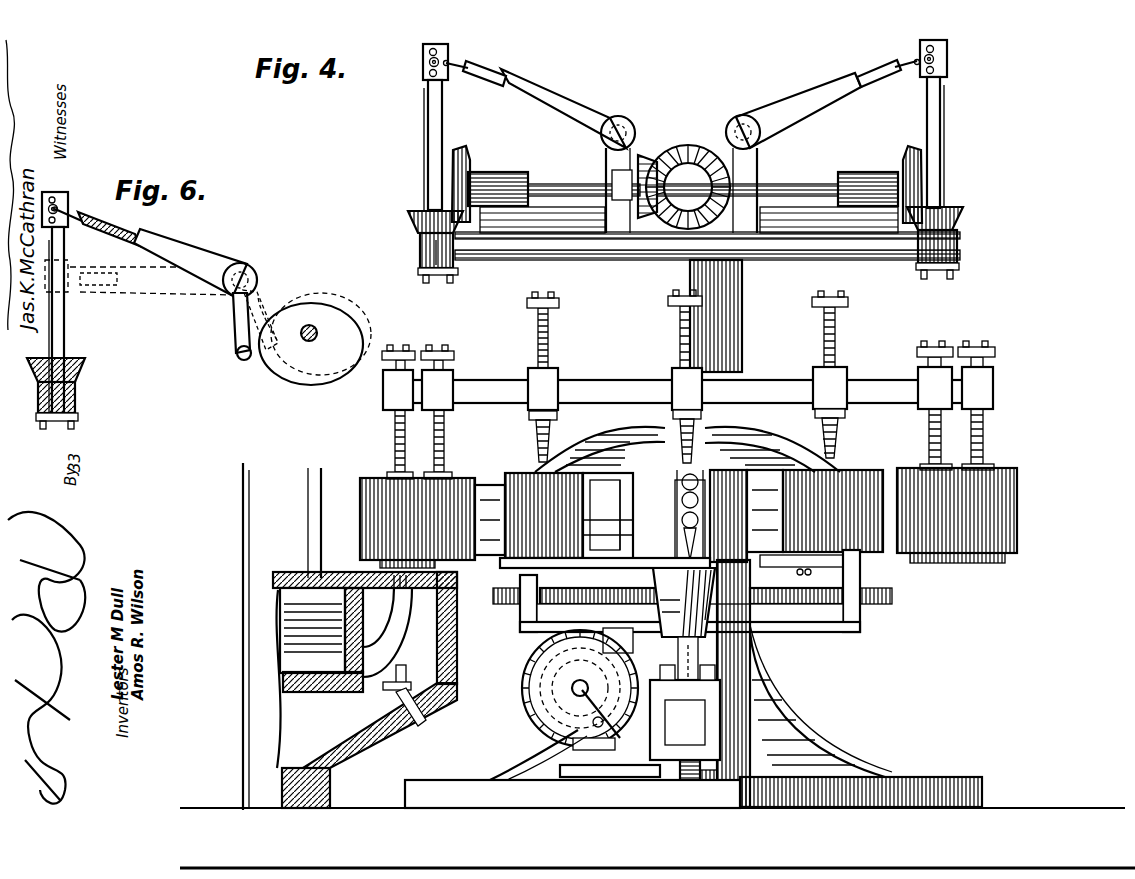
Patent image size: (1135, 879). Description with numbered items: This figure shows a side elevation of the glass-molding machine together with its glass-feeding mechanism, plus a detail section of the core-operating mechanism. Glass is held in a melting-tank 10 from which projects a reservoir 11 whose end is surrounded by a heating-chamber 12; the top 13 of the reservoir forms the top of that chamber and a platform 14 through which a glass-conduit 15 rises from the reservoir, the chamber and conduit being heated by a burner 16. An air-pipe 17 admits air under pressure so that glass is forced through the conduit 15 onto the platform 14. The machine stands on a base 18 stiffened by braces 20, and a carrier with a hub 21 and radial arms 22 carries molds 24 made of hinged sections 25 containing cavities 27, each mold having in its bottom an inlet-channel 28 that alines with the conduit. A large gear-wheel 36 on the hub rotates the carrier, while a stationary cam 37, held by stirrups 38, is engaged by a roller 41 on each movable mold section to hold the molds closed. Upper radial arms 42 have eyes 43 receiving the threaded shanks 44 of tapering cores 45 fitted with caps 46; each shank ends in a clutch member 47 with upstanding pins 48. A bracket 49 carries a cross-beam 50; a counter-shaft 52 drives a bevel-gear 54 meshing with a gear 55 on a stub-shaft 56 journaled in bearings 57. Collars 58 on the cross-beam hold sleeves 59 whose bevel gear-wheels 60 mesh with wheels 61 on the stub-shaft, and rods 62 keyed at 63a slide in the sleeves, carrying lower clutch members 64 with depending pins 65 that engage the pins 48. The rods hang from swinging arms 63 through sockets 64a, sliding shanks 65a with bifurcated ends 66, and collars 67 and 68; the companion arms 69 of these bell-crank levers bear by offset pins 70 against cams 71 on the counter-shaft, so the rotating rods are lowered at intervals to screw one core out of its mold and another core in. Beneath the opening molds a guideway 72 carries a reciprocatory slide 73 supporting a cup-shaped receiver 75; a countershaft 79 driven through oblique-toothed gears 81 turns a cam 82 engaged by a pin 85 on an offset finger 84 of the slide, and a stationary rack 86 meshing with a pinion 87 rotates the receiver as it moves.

In FIG. 4, the melting-tank 10 is at (936, 763).
In FIG. 4, the reservoir 11 is at (330, 600).
In FIG. 4, the heating-chamber 12 is at (367, 690).
In FIG. 4, the top 13 is at (362, 582).
In FIG. 6, the top 13 is at (138, 296).
In FIG. 4, the platform 14 is at (394, 572).
In FIG. 4, the glass-conduit 15 is at (398, 640).
In FIG. 4, the burner 16 is at (390, 690).
In FIG. 4, the air-pipe 17 is at (308, 500).
In FIG. 4, the base 18 is at (572, 794).
In FIG. 4, the braces 20 is at (520, 766).
In FIG. 4, the hub 21 is at (736, 413).
In FIG. 4, the radial arms 22 is at (632, 437).
In FIG. 4, the molds 24 is at (362, 478).
In FIG. 4, the sections 25 is at (655, 497).
In FIG. 4, the cavities 27 is at (692, 470).
In FIG. 4, the inlet-channels 28 is at (684, 602).
In FIG. 4, the gear-wheel 36 is at (893, 597).
In FIG. 4, the cam 37 is at (618, 562).
In FIG. 4, the stirrups 38 is at (520, 618).
In FIG. 4, the roller 41 is at (768, 556).
In FIG. 4, the radial arms 42 is at (600, 382).
In FIG. 4, the eyes 43 is at (383, 392).
In FIG. 4, the shanks 44 is at (548, 342).
In FIG. 4, the cores 45 is at (550, 440).
In FIG. 4, the caps 46 is at (557, 416).
In FIG. 4, the clutch members 47 is at (384, 356).
In FIG. 4, the pins 48 is at (668, 296).
In FIG. 4, the bracket 49 is at (636, 150).
In FIG. 4, the cross-beam 50 is at (596, 262).
In FIG. 6, the counter-shaft 52 is at (314, 338).
In FIG. 4, the bevel-gear 54 is at (703, 148).
In FIG. 4, the gear 55 is at (640, 205).
In FIG. 4, the stub-shaft 56 is at (806, 172).
In FIG. 4, the bearings 57 is at (508, 164).
In FIG. 4, the upright collars 58 is at (420, 250).
In FIG. 4, the sleeves 59 is at (420, 258).
In FIG. 6, the sleeves 59 is at (78, 400).
In FIG. 4, the bevel gear-wheels 60 is at (425, 212).
In FIG. 6, the bevel gear-wheels 60 is at (82, 368).
In FIG. 4, the wheels 61 is at (458, 150).
In FIG. 4, the rods 62 is at (442, 100).
In FIG. 6, the rods 62 is at (64, 326).
In FIG. 4, the swinging arms 63 is at (560, 94).
In FIG. 6, the swinging arms 63 is at (180, 254).
In FIG. 4, the key 63a is at (424, 150).
In FIG. 6, the key 63a is at (49, 330).
In FIG. 4, the clutch members 64 is at (458, 272).
In FIG. 6, the clutch members 64 is at (80, 422).
In FIG. 4, the sockets 64a is at (506, 80).
In FIG. 6, the sockets 64a is at (115, 230).
In FIG. 4, the depending pins 65 is at (428, 283).
In FIG. 6, the depending pins 65 is at (70, 430).
In FIG. 4, the shanks 65a is at (458, 62).
In FIG. 6, the shanks 65a is at (80, 228).
In FIG. 4, the bifurcated ends 66 is at (912, 66).
In FIG. 6, the bifurcated ends 66 is at (52, 225).
In FIG. 4, the collars 67 is at (423, 70).
In FIG. 6, the collars 67 is at (68, 205).
In FIG. 4, the collars 68 is at (440, 48).
In FIG. 6, the collars 68 is at (57, 195).
In FIG. 6, the arms 69 is at (233, 320).
In FIG. 6, the offset pins 70 is at (242, 359).
In FIG. 6, the cams 71 is at (328, 303).
In FIG. 4, the guideway 72 is at (668, 762).
In FIG. 4, the reciprocatory slide 73 is at (712, 770).
In FIG. 4, the receiver 75 is at (709, 683).
In FIG. 4, the countershaft 79 is at (598, 686).
In FIG. 4, the oblique-toothed gears 81 is at (542, 714).
In FIG. 4, the cam 82 is at (565, 678).
In FIG. 4, the finger 84 is at (610, 767).
In FIG. 4, the pin 85 is at (598, 720).
In FIG. 4, the stationary rack 86 is at (593, 710).
In FIG. 4, the pinion 87 is at (663, 680).